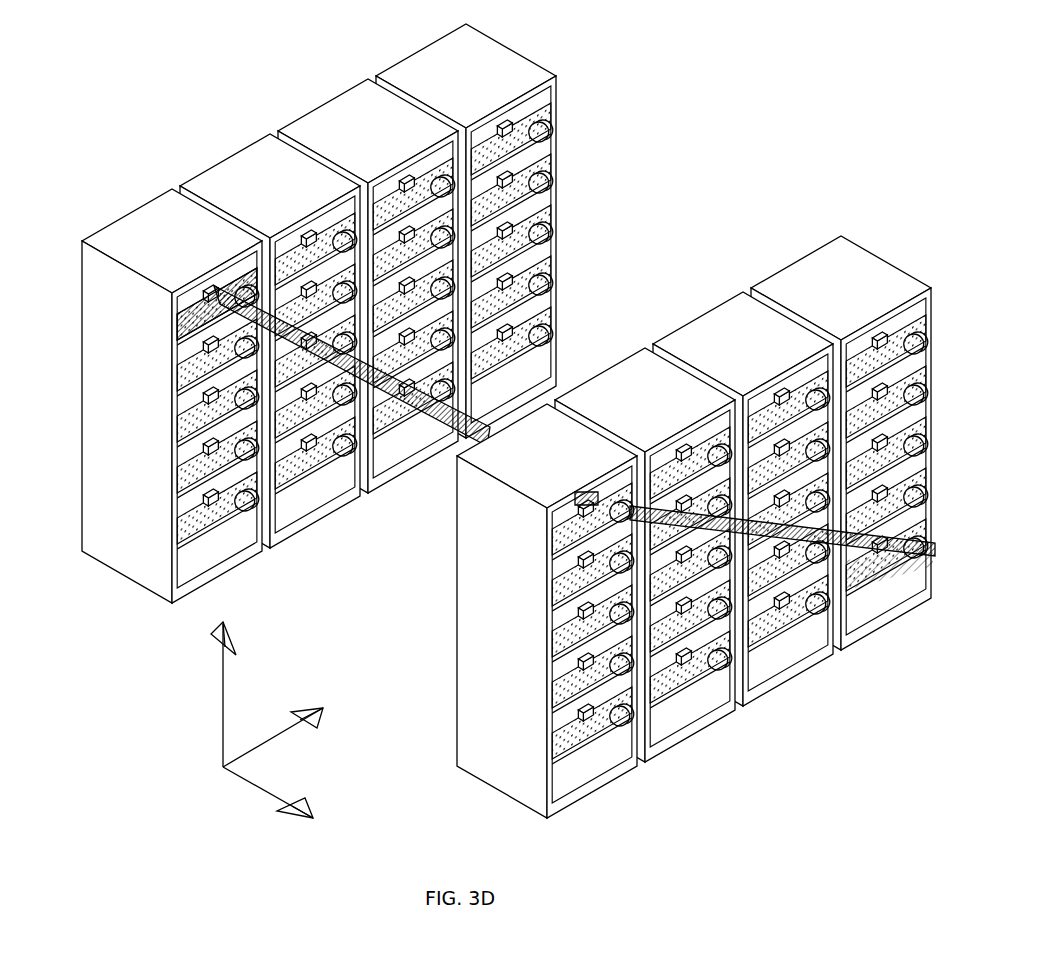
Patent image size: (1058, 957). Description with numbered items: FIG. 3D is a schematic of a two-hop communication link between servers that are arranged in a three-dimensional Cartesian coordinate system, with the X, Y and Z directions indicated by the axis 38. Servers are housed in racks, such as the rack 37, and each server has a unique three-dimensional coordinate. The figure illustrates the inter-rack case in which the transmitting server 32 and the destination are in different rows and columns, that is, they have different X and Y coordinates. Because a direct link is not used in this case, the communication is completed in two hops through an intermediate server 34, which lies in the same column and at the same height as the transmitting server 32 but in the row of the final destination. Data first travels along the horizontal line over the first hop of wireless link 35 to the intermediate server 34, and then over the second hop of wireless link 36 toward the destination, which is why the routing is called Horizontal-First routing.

The transmitting server 32 is at (185, 329).
The intermediate server 34 is at (567, 540).
The first hop of wireless link 35 is at (322, 348).
The second hop of wireless link 36 is at (766, 528).
The rack 37 is at (520, 76).
The axis 38 is at (222, 697).